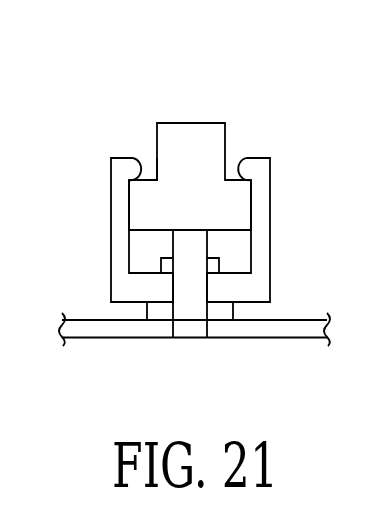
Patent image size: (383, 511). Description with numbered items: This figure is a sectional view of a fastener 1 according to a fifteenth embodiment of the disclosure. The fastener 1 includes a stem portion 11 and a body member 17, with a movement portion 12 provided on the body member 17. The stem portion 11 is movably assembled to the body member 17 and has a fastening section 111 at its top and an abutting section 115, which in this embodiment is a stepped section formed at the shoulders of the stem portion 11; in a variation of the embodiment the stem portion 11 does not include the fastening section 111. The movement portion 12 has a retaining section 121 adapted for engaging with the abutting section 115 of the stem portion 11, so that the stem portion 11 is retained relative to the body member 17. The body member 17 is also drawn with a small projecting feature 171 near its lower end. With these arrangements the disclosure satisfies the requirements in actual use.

The fastener 1 is at (73, 60).
The stem portion 11 is at (231, 144).
The fastening section 111 is at (198, 128).
The abutting section 115 is at (147, 173).
The movement portion 12 is at (270, 263).
The retaining section 121 is at (133, 165).
The body member 17 is at (223, 310).
The flange of fixing post 171 is at (213, 265).